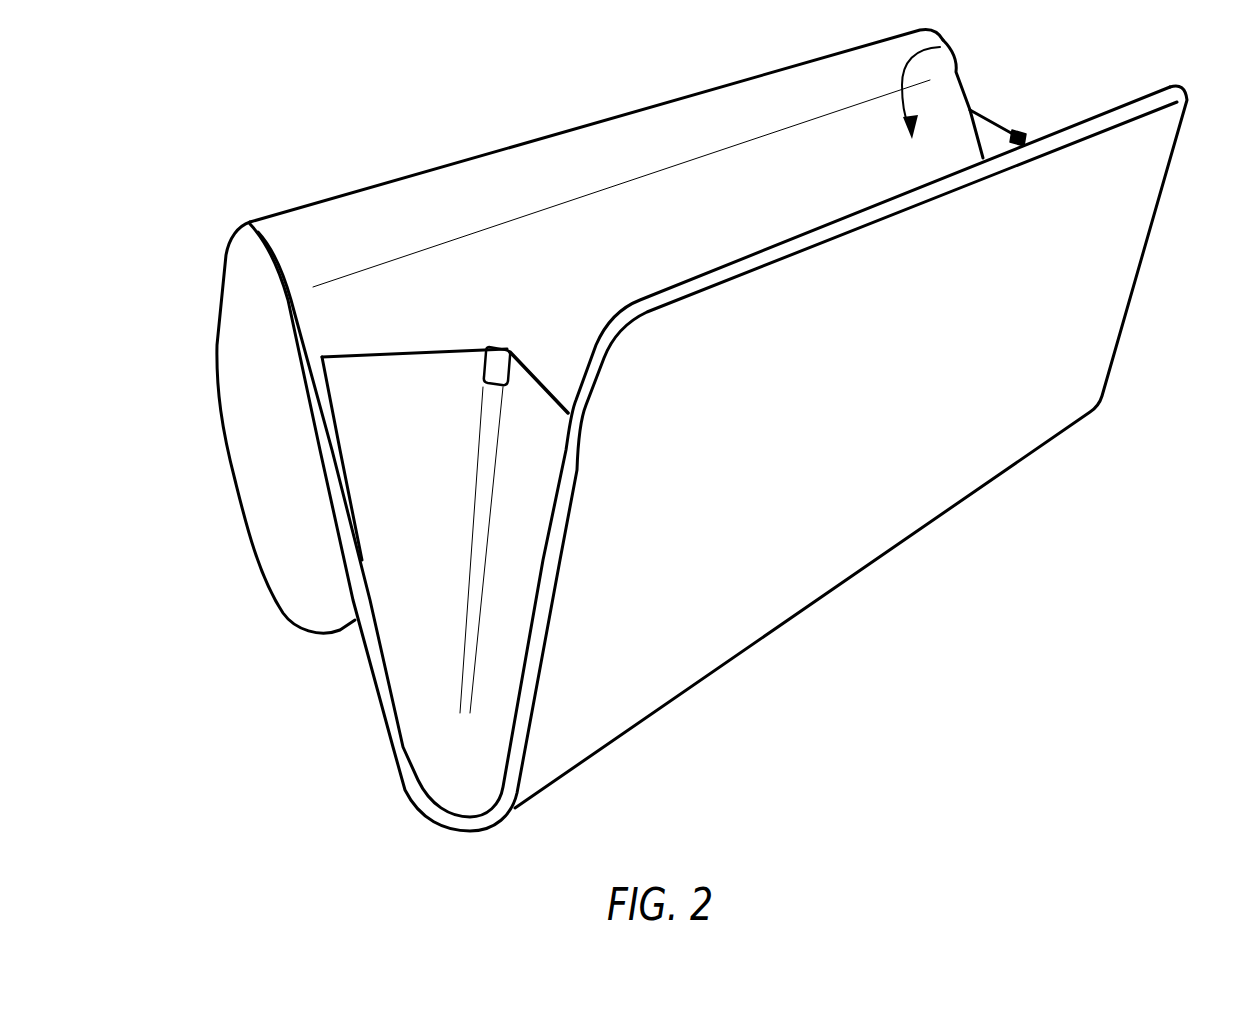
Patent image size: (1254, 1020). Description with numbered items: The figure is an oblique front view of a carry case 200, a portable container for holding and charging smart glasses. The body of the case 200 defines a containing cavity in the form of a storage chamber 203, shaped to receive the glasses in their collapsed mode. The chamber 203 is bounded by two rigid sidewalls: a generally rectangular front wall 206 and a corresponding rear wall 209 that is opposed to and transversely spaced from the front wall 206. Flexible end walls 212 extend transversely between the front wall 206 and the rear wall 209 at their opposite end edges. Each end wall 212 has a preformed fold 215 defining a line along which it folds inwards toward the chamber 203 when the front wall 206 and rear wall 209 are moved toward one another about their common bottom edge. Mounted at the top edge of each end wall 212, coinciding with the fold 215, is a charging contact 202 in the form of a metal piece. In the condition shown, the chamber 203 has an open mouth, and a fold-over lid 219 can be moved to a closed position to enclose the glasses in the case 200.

The carry case 200 is at (703, 428).
The charging contact 202 is at (497, 362).
The storage chamber 203 is at (940, 47).
The front wall 206 is at (932, 480).
The rear wall 209 is at (772, 167).
The end wall 212 is at (425, 403).
The preformed fold 215 is at (467, 652).
The fold-over lid 219 is at (267, 518).